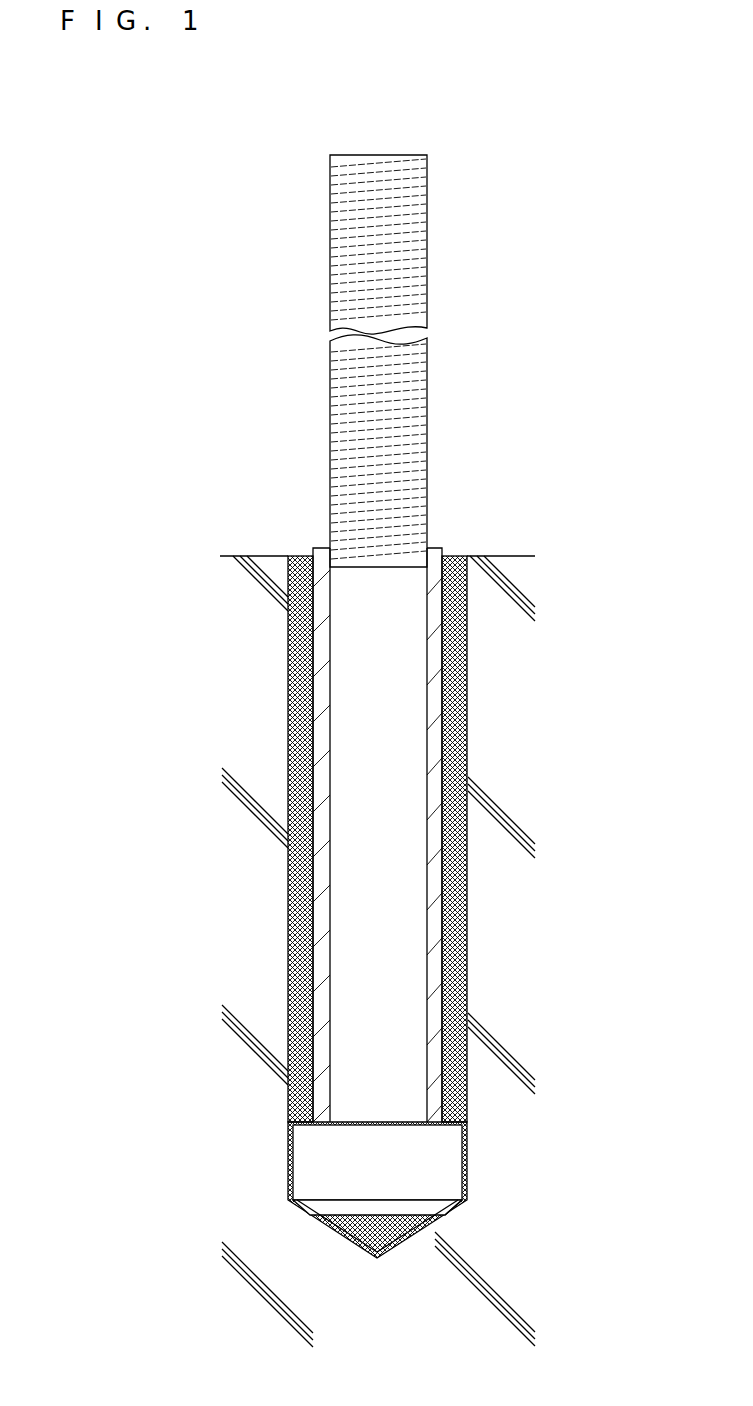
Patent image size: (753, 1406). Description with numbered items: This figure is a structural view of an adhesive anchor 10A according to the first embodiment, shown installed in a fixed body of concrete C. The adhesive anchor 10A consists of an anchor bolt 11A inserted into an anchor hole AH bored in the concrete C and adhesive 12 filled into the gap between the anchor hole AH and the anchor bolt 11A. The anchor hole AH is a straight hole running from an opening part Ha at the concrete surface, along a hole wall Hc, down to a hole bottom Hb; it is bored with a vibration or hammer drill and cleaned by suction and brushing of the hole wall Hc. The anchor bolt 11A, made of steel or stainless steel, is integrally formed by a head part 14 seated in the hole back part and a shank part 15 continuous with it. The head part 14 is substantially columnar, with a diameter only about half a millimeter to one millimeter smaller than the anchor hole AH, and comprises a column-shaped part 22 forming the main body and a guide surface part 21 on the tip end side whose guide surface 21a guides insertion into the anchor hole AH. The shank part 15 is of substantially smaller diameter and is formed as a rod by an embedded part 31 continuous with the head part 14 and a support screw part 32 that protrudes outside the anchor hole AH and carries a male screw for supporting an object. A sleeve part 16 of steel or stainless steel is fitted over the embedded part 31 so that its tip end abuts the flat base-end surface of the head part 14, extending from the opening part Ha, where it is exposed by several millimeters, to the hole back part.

The adhesive anchor 10A is at (407, 78).
The anchor bolt 11A is at (345, 126).
The adhesive 12 is at (468, 690).
The head part 14 is at (470, 1157).
The shank part 15 is at (429, 883).
The sleeve part 16 is at (445, 932).
The guide surface part 21 is at (303, 1208).
The guide surface 21a is at (445, 1205).
The column-shaped part 22 is at (320, 1155).
The embedded part 31 is at (347, 713).
The support screw part 32 is at (330, 383).
The opening part Ha is at (288, 556).
The anchor hole AH is at (455, 554).
The concrete C is at (512, 556).
The hole wall Hc is at (460, 983).
The hole bottom Hb is at (357, 1250).